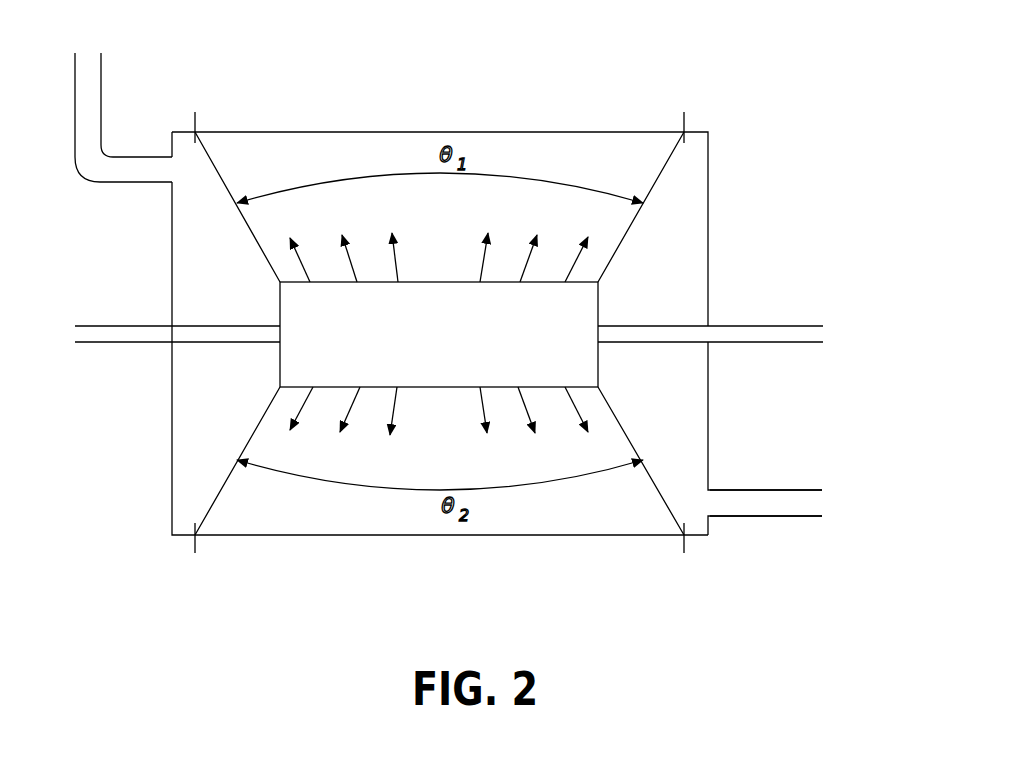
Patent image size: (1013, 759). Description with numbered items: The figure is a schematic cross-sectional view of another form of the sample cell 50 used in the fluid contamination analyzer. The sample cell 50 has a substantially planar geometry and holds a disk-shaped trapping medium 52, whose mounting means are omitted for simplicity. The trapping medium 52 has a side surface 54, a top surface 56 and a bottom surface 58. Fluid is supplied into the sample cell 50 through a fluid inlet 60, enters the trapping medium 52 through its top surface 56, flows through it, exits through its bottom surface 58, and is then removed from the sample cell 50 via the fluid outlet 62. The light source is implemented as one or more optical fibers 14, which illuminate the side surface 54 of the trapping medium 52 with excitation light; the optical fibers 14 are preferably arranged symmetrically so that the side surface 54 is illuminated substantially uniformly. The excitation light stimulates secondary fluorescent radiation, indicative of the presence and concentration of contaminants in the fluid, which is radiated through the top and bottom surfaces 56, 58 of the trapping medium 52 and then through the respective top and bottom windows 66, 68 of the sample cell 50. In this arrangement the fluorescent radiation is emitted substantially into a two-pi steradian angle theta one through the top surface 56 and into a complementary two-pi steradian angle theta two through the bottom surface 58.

The optical fibers 14 is at (127, 342).
The sample cell 50 is at (770, 96).
The trapping medium 52 is at (466, 342).
The side surface 54 is at (278, 352).
The top surface 56 is at (425, 282).
The bottom surface 58 is at (437, 387).
The fluid inlet 60 is at (101, 97).
The fluid outlet 62 is at (767, 490).
The top window 66 is at (387, 131).
The bottom window 68 is at (337, 535).